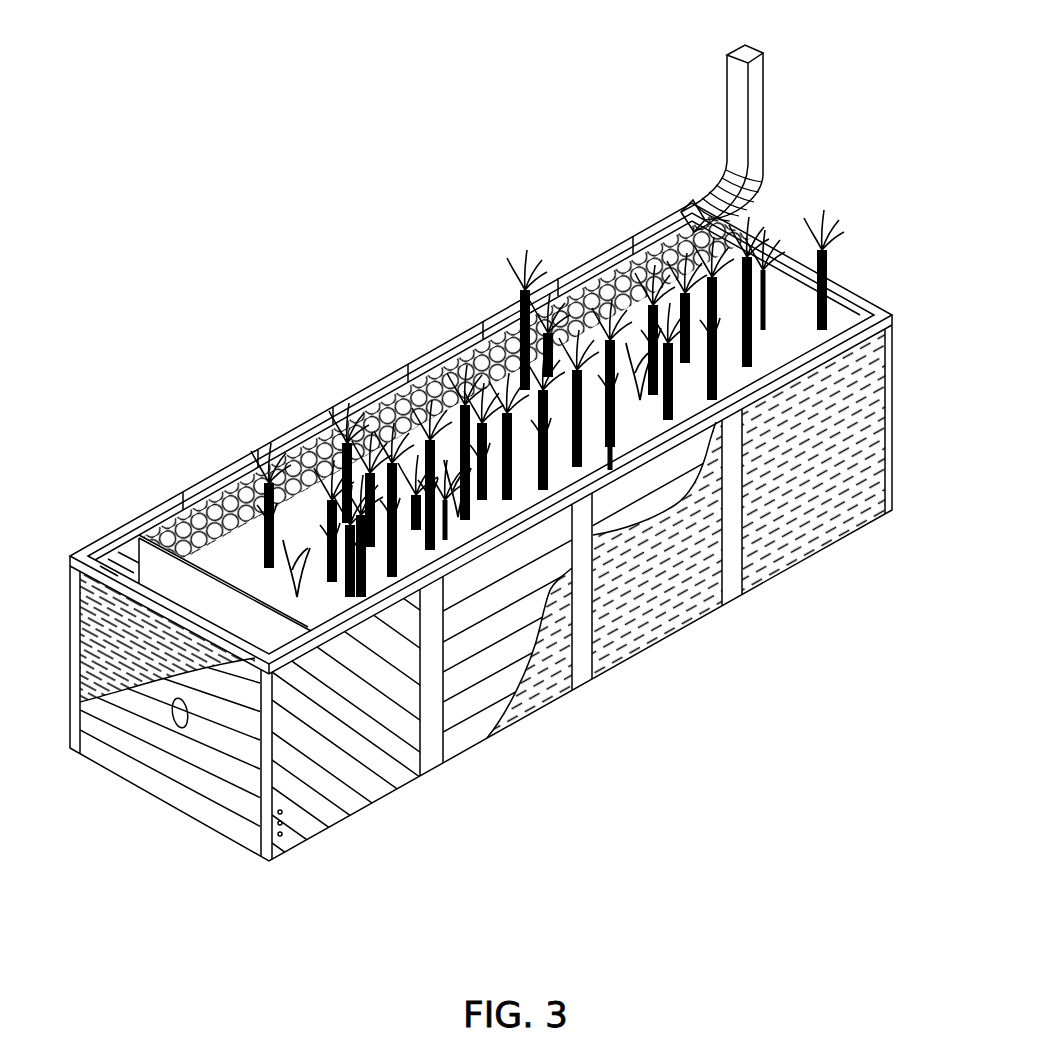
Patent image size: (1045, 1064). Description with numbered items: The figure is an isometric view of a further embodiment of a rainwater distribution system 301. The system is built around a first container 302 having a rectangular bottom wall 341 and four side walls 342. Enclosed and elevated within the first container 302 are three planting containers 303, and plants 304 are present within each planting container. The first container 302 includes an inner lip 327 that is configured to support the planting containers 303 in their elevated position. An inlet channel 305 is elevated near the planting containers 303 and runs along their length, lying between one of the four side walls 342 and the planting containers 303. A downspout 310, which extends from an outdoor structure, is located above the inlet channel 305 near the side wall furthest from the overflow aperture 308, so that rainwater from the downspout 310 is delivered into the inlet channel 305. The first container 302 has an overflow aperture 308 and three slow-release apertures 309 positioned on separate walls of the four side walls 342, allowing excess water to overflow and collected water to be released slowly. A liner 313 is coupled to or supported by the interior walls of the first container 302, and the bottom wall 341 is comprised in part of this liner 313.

The rainwater distribution system 301 is at (378, 264).
The first container 302 is at (677, 605).
The planting containers 303 is at (370, 420).
The plants 304 is at (703, 236).
The inlet channel 305 is at (237, 473).
The overflow aperture 308 is at (176, 728).
The slow-release apertures 309 is at (289, 829).
The downspout 310 is at (765, 176).
The liner 313 is at (120, 537).
The inner lip 327 is at (112, 555).
The bottom wall 341 is at (596, 675).
The side walls 342 is at (893, 435).